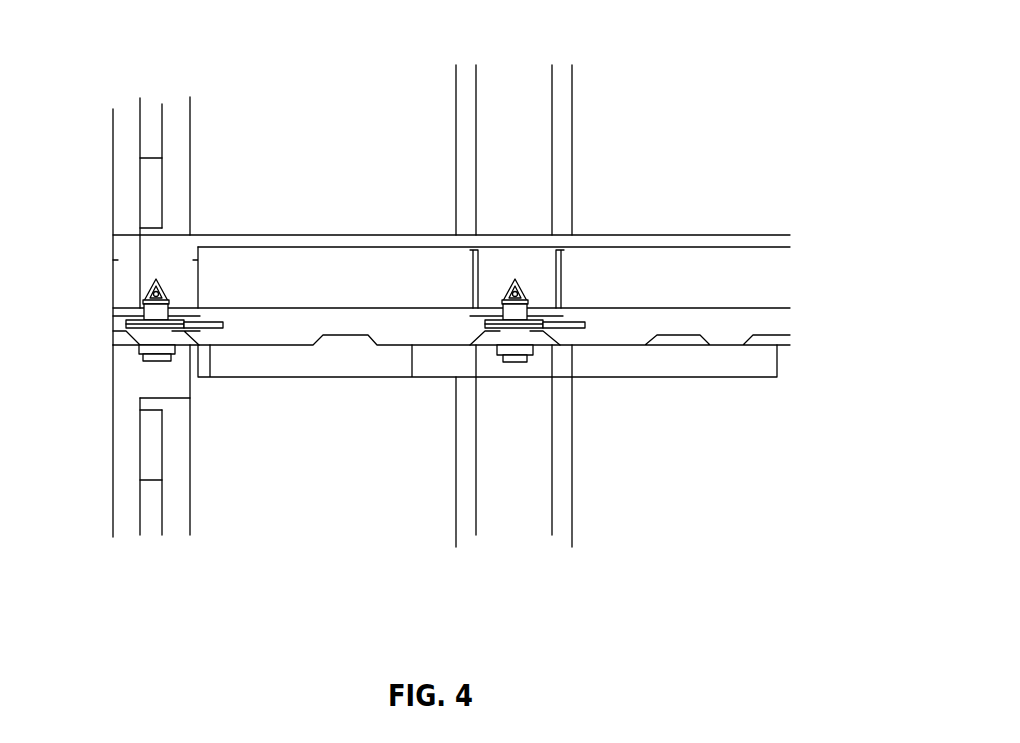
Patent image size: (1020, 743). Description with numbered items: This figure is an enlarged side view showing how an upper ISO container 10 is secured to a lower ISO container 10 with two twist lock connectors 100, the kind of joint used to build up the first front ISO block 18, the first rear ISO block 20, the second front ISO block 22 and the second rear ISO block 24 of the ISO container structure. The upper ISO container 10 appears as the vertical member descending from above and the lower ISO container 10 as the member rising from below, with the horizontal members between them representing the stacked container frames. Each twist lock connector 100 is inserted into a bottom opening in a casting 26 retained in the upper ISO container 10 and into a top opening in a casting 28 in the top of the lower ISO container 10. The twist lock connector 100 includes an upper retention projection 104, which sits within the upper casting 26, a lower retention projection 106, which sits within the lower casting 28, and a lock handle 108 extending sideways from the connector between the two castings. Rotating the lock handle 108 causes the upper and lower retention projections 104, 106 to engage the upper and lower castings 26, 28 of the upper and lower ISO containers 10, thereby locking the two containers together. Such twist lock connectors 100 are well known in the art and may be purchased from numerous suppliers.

The ISO container 10 is at (113, 163).
The first front ISO block 18 is at (451, 282).
The first rear ISO block 20 is at (451, 282).
The second front ISO block 22 is at (451, 282).
The second rear ISO block 24 is at (518, 67).
The casting 26 is at (200, 268).
The casting 28 is at (193, 368).
The twist lock connector 100 is at (347, 317).
The upper retention projection 104 is at (508, 283).
The lower retention projection 106 is at (516, 363).
The lock handle 108 is at (584, 325).